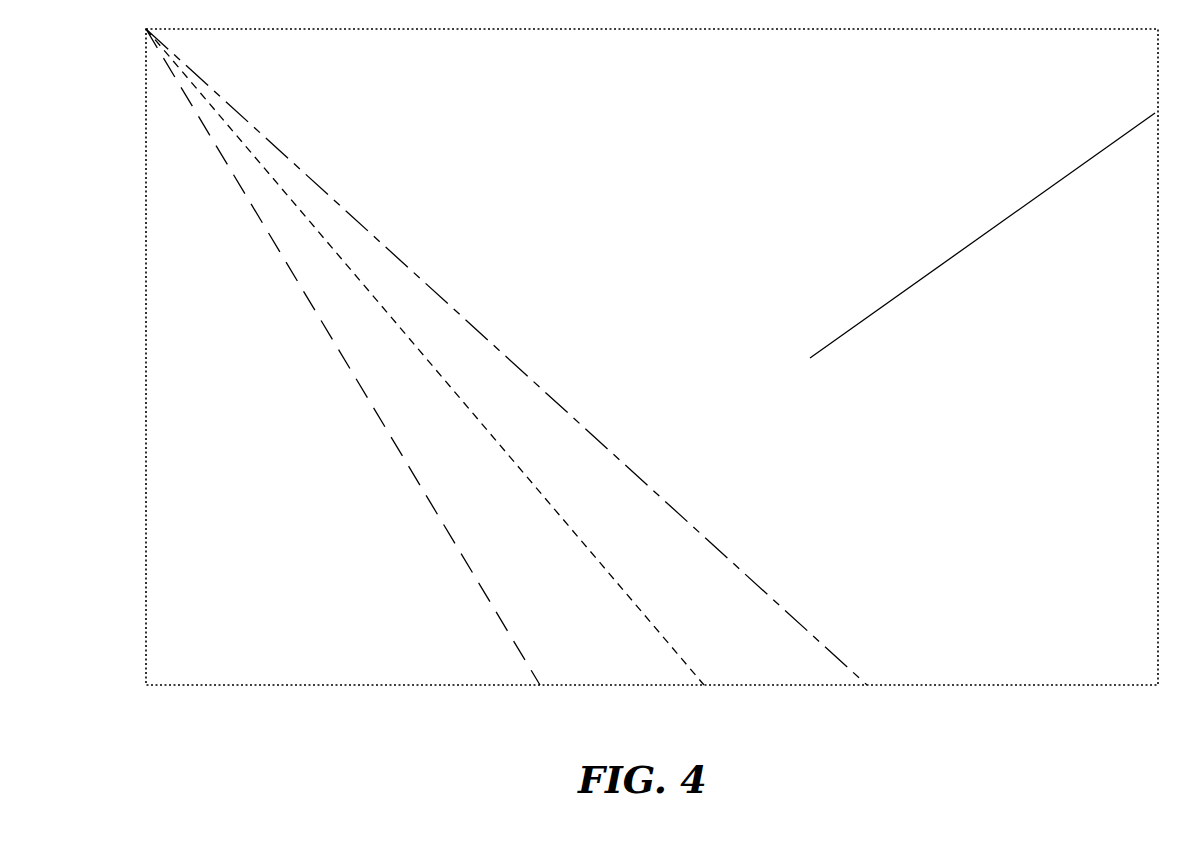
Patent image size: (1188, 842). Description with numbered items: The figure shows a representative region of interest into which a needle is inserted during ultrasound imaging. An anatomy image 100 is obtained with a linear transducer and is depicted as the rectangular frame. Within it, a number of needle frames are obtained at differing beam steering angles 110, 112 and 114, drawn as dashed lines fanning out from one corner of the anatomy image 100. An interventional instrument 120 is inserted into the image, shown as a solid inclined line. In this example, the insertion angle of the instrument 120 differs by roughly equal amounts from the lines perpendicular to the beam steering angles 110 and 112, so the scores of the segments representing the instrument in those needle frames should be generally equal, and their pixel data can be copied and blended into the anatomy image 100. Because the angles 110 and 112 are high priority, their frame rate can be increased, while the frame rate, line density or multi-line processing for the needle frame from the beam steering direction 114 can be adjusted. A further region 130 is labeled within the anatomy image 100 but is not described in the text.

The anatomy image 100 is at (146, 376).
The beam steering angle 110 is at (463, 556).
The beam steering angle 112 is at (605, 565).
The beam steering angle 114 is at (755, 583).
The interventional instrument 120 is at (972, 245).
The region 130 is at (259, 589).